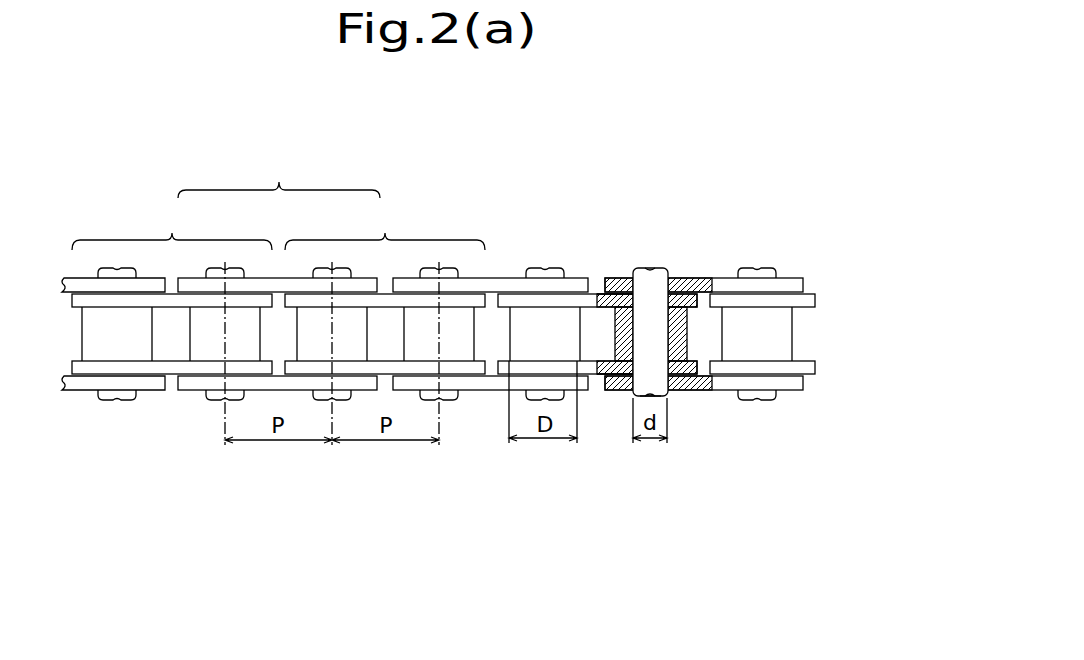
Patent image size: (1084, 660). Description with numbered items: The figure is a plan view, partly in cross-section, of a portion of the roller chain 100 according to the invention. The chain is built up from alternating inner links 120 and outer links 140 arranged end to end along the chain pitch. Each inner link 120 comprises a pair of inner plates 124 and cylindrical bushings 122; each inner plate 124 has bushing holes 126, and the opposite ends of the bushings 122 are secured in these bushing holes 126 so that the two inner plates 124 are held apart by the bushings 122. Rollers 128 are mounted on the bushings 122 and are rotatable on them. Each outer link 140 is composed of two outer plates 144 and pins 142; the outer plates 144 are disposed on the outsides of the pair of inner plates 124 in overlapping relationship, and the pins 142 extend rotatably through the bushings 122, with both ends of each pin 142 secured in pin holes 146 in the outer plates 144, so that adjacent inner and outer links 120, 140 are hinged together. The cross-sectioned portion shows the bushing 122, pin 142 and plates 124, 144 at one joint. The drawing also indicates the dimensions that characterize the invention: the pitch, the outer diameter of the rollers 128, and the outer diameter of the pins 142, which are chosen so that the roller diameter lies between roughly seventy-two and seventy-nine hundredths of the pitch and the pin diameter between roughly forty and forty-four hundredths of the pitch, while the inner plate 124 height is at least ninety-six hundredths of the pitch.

The roller chain 100 is at (547, 499).
The inner link 120 is at (278, 225).
The cylindrical bushing 122 is at (678, 330).
The inner plate 124 is at (475, 296).
The bushing hole 126 is at (636, 286).
The roller 128 is at (616, 334).
The outer link 140 is at (279, 173).
The pin 142 is at (648, 267).
The outer plate 144 is at (788, 279).
The pin hole 146 is at (660, 386).